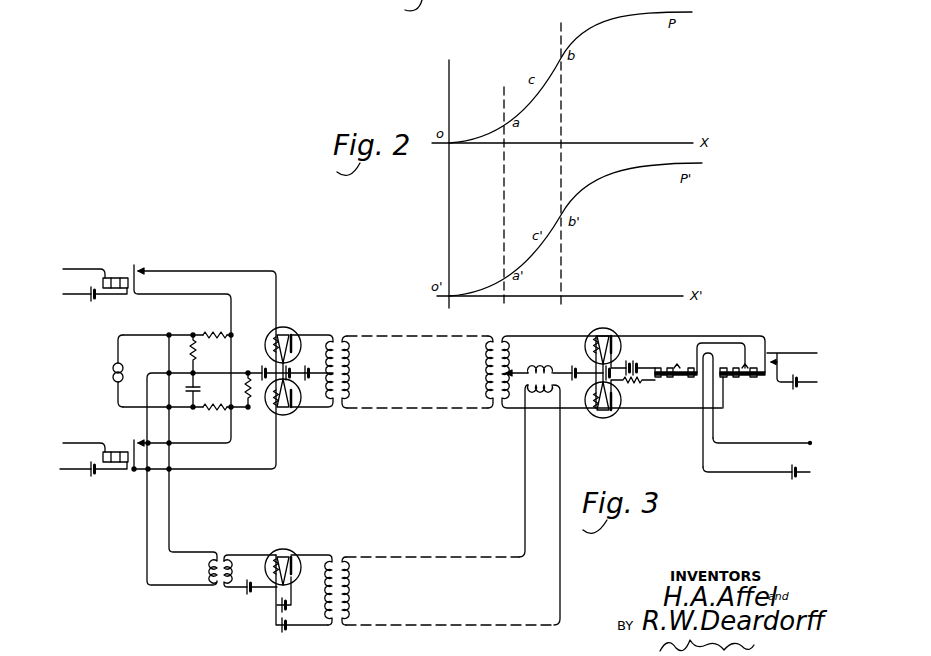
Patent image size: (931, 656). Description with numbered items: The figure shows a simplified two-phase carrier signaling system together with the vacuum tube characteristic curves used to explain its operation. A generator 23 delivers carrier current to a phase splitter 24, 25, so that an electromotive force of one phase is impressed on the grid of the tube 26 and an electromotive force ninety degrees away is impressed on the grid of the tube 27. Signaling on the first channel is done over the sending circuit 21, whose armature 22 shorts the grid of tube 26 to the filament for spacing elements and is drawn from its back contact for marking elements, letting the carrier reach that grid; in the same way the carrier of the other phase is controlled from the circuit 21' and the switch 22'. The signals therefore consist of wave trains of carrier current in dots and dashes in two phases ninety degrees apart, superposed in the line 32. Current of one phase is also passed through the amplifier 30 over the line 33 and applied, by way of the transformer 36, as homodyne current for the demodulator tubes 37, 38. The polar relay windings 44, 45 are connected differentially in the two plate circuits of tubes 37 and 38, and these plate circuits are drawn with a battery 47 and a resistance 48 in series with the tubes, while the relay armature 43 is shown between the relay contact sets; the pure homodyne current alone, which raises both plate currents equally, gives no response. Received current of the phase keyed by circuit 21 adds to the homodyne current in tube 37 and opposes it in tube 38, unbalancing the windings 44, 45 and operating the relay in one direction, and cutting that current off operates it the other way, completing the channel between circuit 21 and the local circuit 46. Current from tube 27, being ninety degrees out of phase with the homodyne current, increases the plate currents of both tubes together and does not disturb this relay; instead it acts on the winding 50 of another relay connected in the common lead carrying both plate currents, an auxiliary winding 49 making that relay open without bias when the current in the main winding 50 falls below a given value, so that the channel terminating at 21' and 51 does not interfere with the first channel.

The sending circuit 21 is at (82, 272).
The armature 22 is at (109, 275).
The circuit 21' is at (81, 447).
The switch 22' is at (109, 451).
The generator 23 is at (112, 372).
The phase splitter 24 is at (196, 362).
The phase splitter 25 is at (199, 394).
The tube 26 is at (291, 324).
The tube 27 is at (283, 416).
The amplifier 30 is at (297, 550).
The line 32 is at (417, 372).
The line 33 is at (451, 505).
The transformer 36 is at (554, 371).
The tube 37 is at (612, 333).
The tube 38 is at (596, 417).
The relay armature 43 is at (713, 343).
The relay winding 44 is at (725, 378).
The relay winding 45 is at (753, 378).
The local circuit 46 is at (792, 362).
The battery 47 is at (633, 360).
The resistance 48 is at (633, 383).
The winding 49 is at (659, 378).
The winding 50 is at (690, 378).
The channel terminal 51 is at (757, 452).